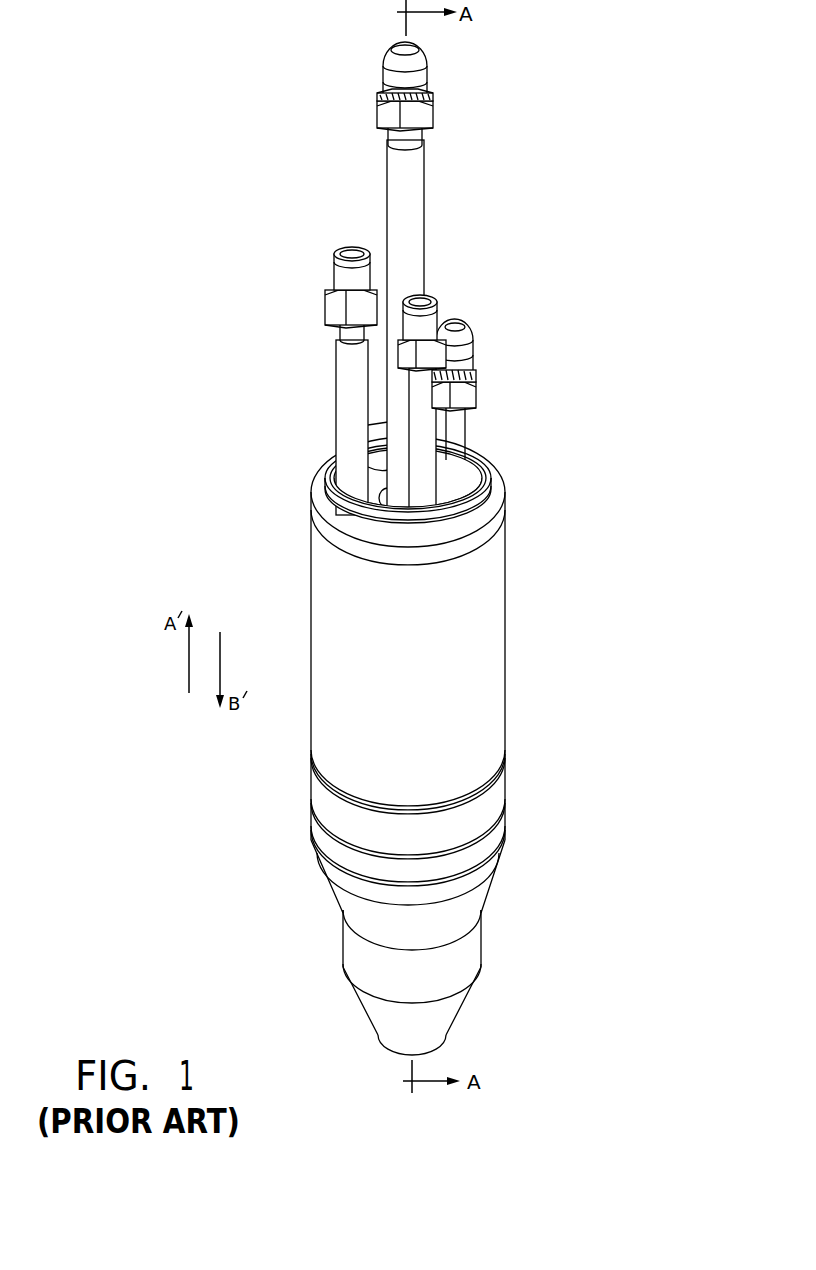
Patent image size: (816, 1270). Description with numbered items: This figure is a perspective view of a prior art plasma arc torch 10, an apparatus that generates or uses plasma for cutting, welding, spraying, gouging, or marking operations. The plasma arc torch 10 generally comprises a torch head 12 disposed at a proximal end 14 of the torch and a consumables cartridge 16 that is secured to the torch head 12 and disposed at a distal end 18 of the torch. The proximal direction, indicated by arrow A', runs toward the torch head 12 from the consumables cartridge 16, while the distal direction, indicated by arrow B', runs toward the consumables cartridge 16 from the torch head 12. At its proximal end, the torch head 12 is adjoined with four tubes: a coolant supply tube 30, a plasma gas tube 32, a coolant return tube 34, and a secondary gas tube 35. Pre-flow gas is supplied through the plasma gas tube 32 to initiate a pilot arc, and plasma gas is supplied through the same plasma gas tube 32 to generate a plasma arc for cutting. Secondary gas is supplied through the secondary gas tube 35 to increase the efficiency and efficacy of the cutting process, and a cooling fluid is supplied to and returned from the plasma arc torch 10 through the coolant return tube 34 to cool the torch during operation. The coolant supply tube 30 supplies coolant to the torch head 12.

The plasma arc torch 10 is at (640, 415).
The torch head 12 is at (522, 614).
The proximal end 14 is at (292, 521).
The consumables cartridge 16 is at (498, 918).
The distal end 18 is at (340, 1012).
The coolant supply tube 30 is at (400, 199).
The plasma gas tube 32 is at (425, 437).
The coolant return tube 34 is at (457, 415).
The secondary gas tube 35 is at (345, 383).